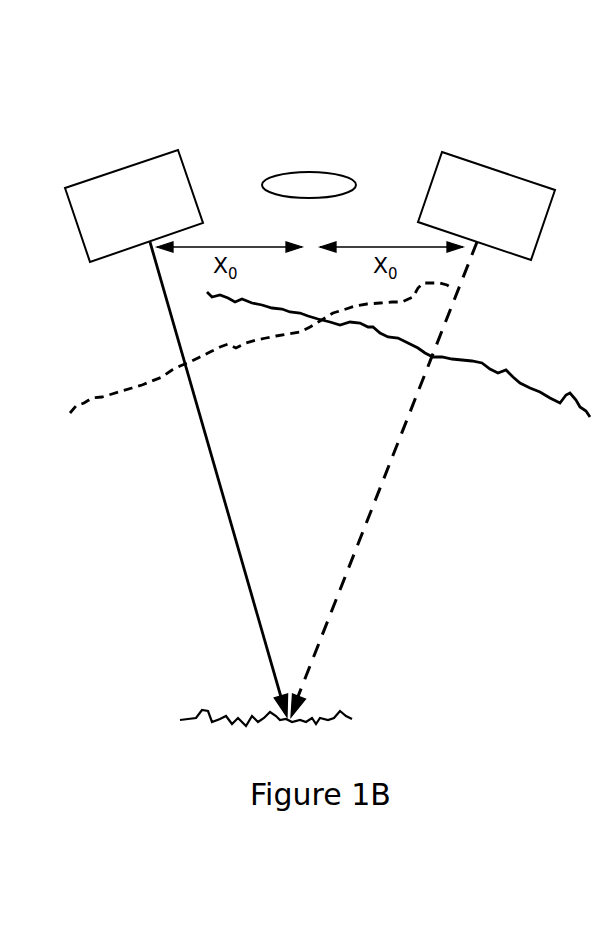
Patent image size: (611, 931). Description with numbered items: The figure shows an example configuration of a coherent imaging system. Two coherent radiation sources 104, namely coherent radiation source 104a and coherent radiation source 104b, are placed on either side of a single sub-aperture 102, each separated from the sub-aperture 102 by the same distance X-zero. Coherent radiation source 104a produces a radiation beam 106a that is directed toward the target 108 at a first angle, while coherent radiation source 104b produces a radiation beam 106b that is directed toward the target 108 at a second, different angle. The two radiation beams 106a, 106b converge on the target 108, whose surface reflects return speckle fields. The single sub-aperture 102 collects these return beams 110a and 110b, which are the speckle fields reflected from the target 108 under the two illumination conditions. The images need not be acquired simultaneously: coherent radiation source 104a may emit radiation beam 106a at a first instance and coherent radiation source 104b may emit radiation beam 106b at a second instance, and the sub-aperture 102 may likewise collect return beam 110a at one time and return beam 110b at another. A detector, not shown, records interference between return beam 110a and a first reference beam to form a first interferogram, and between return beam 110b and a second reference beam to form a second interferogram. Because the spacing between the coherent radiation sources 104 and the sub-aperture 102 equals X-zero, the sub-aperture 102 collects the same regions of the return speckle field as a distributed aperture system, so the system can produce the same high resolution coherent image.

The coherent radiation sources 104 is at (156, 152).
The coherent radiation source 104a is at (151, 214).
The coherent radiation source 104b is at (508, 214).
The sub-aperture 102 is at (307, 178).
The radiation beam 106a is at (225, 510).
The radiation beam 106b is at (363, 530).
The target 108 is at (362, 718).
The return beam 110a is at (560, 405).
The return beam 110b is at (252, 347).